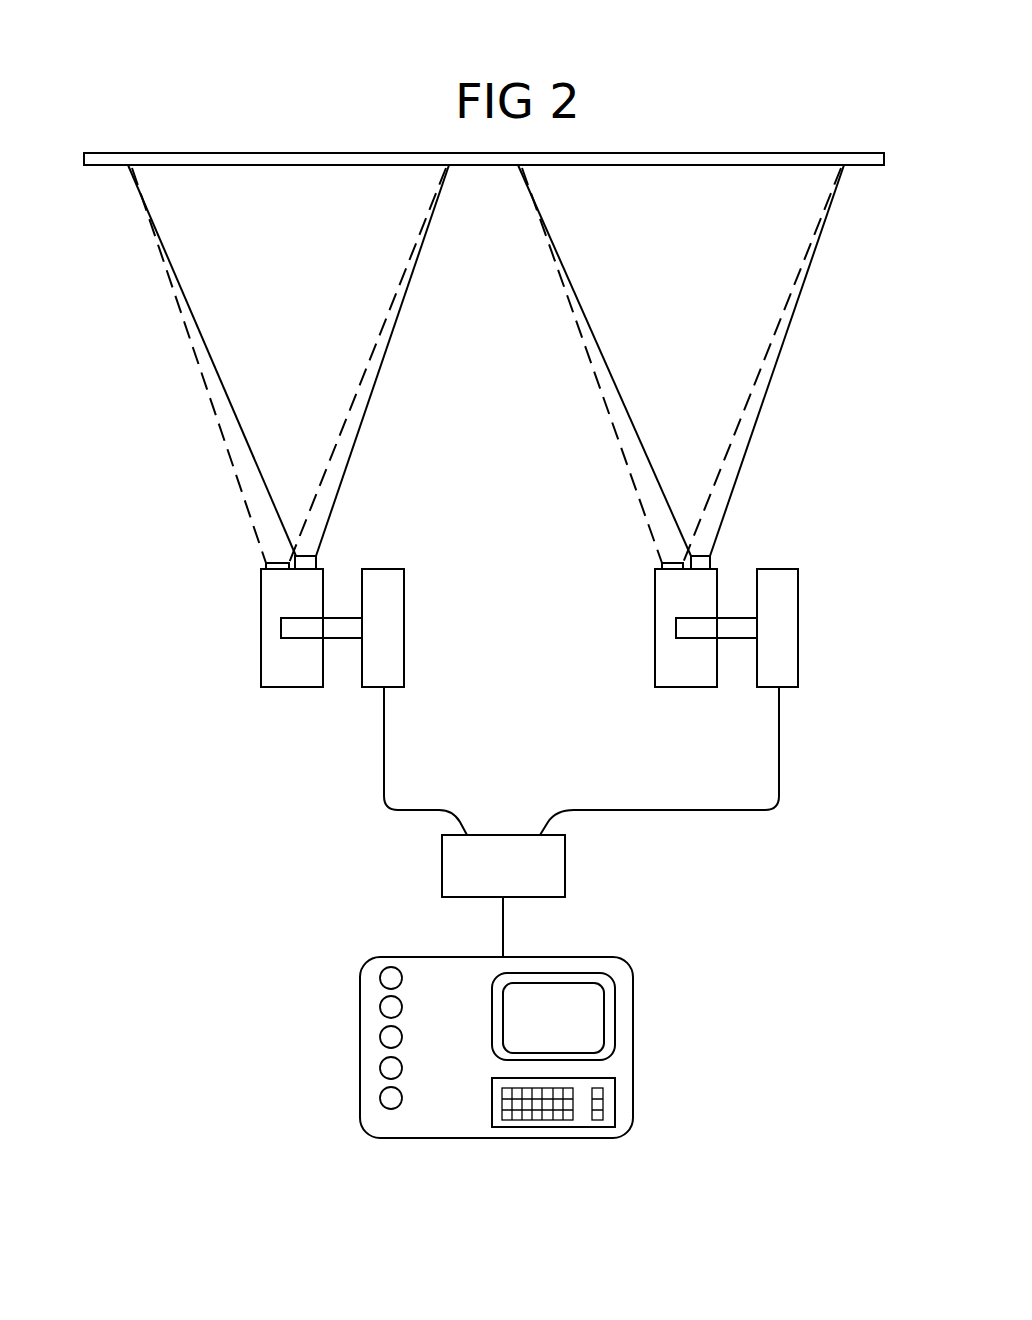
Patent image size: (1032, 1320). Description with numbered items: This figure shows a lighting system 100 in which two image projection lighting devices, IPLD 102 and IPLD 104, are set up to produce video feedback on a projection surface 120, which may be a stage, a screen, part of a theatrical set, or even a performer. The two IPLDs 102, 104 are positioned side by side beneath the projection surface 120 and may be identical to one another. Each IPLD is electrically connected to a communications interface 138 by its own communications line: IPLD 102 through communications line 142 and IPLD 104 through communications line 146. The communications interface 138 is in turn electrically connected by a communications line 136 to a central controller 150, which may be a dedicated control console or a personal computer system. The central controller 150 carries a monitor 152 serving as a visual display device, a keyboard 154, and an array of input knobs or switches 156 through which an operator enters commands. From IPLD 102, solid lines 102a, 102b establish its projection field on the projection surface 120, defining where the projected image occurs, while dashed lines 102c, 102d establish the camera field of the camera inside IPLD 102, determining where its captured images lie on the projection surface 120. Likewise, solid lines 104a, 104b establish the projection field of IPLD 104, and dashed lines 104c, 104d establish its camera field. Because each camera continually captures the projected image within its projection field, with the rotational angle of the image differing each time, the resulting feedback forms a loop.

The lighting system 100 is at (122, 369).
The projection surface 120 is at (320, 175).
The image projection lighting device 102 is at (242, 657).
The image projection lighting device 104 is at (808, 660).
The solid line 102a is at (232, 378).
The solid line 102b is at (382, 380).
The dashed line 102c is at (230, 503).
The dashed line 102d is at (312, 503).
The solid line 104a is at (622, 378).
The solid line 104b is at (785, 375).
The dashed line 104c is at (628, 508).
The dashed line 104d is at (710, 503).
The communications line 142 is at (378, 743).
The communications line 146 is at (632, 817).
The communications interface 138 is at (442, 877).
The communications line 136 is at (510, 935).
The central controller 150 is at (358, 1050).
The monitor 152 is at (620, 1013).
The keyboard 154 is at (620, 1103).
The array of input knobs or switches 156 is at (417, 1027).